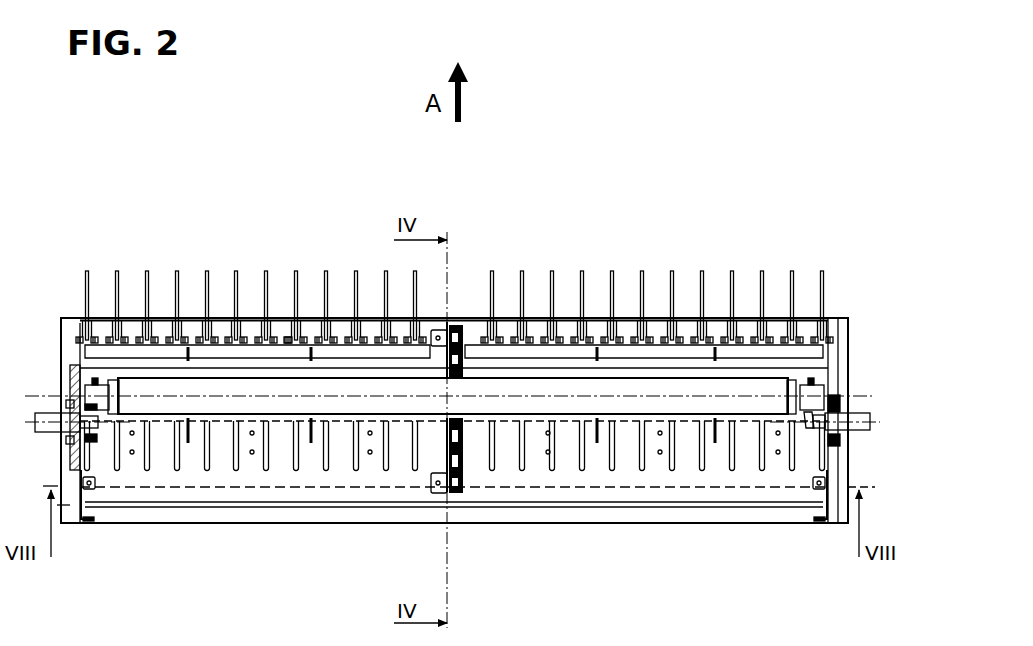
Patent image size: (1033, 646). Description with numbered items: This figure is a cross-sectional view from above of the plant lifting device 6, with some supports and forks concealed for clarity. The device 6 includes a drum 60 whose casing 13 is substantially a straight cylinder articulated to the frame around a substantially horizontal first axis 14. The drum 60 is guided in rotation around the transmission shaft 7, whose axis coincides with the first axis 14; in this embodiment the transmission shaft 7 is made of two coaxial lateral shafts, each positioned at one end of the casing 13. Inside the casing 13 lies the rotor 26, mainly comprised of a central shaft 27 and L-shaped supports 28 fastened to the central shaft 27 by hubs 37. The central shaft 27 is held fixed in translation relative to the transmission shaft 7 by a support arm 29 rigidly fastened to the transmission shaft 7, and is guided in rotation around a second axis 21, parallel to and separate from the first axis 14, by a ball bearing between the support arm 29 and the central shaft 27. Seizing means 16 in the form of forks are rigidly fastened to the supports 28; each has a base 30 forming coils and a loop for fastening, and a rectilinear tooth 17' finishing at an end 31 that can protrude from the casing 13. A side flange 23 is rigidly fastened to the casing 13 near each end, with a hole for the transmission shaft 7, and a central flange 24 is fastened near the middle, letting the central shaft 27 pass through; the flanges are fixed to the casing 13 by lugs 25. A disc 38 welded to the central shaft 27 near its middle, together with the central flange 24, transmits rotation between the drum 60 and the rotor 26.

The plant lifting device 6 is at (66, 141).
The seizing means 16 is at (76, 264).
The tooth 17' is at (112, 277).
The support 28 is at (188, 350).
The base 30 is at (290, 336).
The drum 60 is at (345, 316).
The central shaft 27 is at (553, 378).
The hub 37 is at (597, 356).
The end 31 is at (791, 272).
The second axis 21 is at (870, 396).
The first axis 14 is at (878, 414).
The rotor 26 is at (858, 443).
The transmission shaft 7 is at (46, 437).
The side flange 23 is at (81, 478).
The lug 25 is at (432, 485).
The central flange 24 is at (445, 480).
The disc 38 is at (468, 445).
The casing 13 is at (657, 524).
The support arm 29 is at (809, 428).